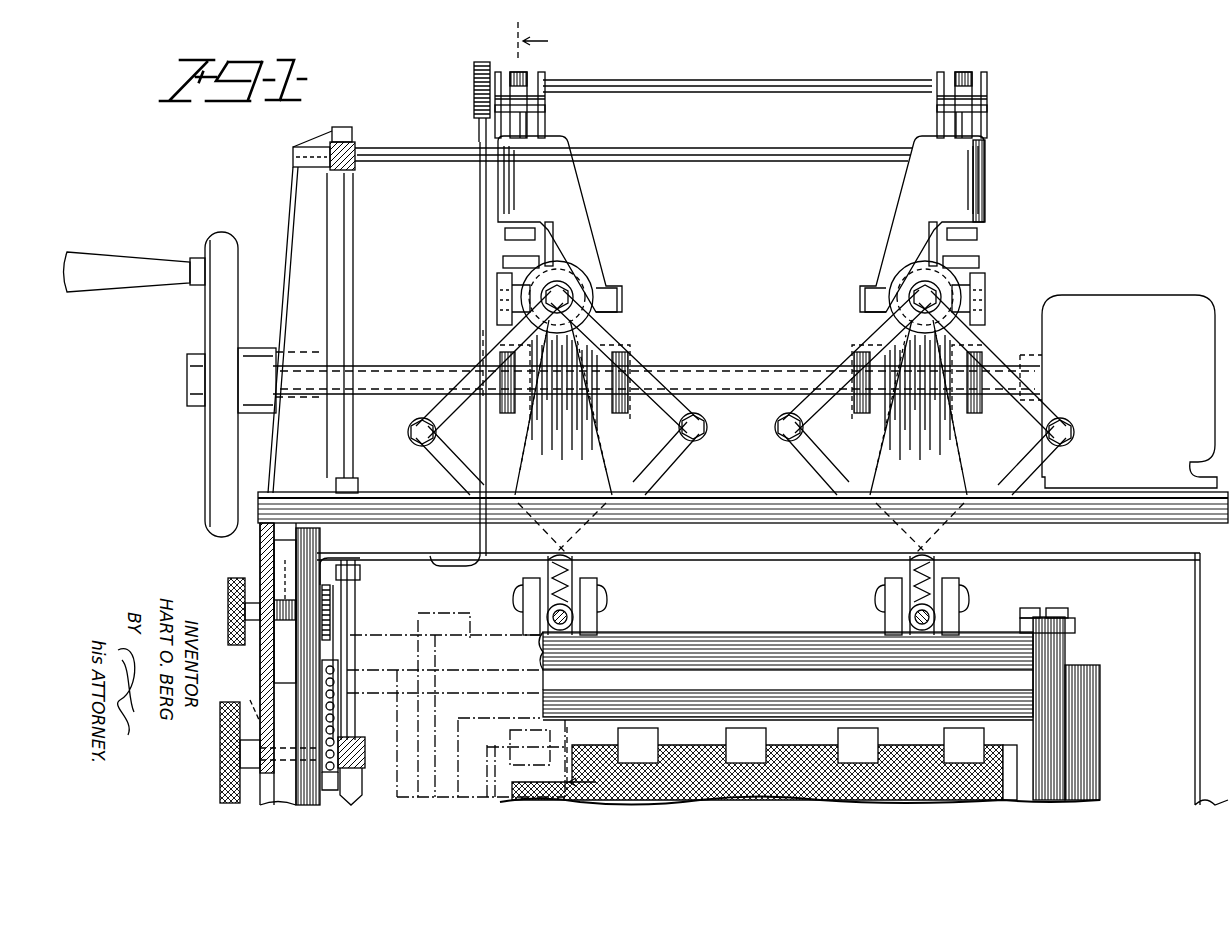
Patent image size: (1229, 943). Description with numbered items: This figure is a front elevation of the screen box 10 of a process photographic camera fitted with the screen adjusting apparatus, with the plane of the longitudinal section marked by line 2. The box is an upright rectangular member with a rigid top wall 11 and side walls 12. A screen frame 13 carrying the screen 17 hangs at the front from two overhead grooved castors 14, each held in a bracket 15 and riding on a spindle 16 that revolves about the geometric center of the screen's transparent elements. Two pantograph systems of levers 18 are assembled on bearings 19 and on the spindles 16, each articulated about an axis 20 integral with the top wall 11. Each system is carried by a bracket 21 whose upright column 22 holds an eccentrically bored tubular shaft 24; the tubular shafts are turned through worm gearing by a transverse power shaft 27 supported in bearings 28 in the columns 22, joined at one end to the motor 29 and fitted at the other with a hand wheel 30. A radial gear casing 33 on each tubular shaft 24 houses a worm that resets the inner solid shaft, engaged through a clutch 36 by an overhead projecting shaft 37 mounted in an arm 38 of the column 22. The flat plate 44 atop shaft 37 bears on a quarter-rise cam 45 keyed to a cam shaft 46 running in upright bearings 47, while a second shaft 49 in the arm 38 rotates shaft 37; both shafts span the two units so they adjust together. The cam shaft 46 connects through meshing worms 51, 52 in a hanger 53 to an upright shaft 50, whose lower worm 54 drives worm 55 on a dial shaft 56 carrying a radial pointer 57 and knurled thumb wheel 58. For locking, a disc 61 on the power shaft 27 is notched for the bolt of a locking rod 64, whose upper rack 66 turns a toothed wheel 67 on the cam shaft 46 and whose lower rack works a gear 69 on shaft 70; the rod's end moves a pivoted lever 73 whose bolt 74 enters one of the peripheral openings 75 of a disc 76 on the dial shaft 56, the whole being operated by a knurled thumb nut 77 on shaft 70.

The section line 2— 2 is at (557, 413).
The screen box 10 is at (752, 548).
The top wall 11 is at (668, 553).
The side wall 12 is at (260, 667).
The screen frame 13 is at (677, 632).
The grooved castor 14 is at (540, 570).
The bracket 15 is at (598, 615).
The spindle 16 is at (547, 618).
The screen 17 is at (997, 770).
The lever 18 is at (860, 355).
The bearing 19 is at (410, 440).
The axis 20 is at (572, 576).
The bracket 21 is at (590, 440).
The column 22 is at (741, 395).
The tubular shaft 24 is at (578, 284).
The power shaft 27 is at (748, 368).
The bearing 28 is at (490, 412).
The motor 29 is at (1095, 295).
The hand wheel 30 is at (232, 300).
The gear casing 33 is at (497, 285).
The clutch 36 is at (518, 243).
The projecting shaft 37 is at (527, 128).
The arm 38 is at (556, 195).
The flat plate 44 is at (546, 110).
The cam 45 is at (512, 72).
The cam shaft 46 is at (612, 80).
The upright bearing 47 is at (540, 72).
The shaft 49 is at (645, 148).
The upright shaft 50 is at (353, 248).
The worm 51 is at (353, 142).
The worm 52 is at (355, 170).
The hanger 53 is at (284, 243).
The worm 54 is at (365, 746).
The worm 55 is at (365, 754).
The dial shaft 56 is at (248, 702).
The radial pointer 57 is at (250, 778).
The knurled thumb wheel 58 is at (224, 704).
The disc 61 is at (480, 333).
The locking rod 64 is at (480, 220).
The rack 66 is at (476, 62).
The toothed wheel 67 is at (474, 75).
The gear 69 is at (345, 584).
The shaft 70 is at (284, 611).
The lever 73 is at (322, 630).
The pivoted bolt 74 is at (337, 650).
The peripheral opening 75 is at (338, 690).
The disc 76 is at (338, 712).
The knurled thumb nut 77 is at (232, 580).